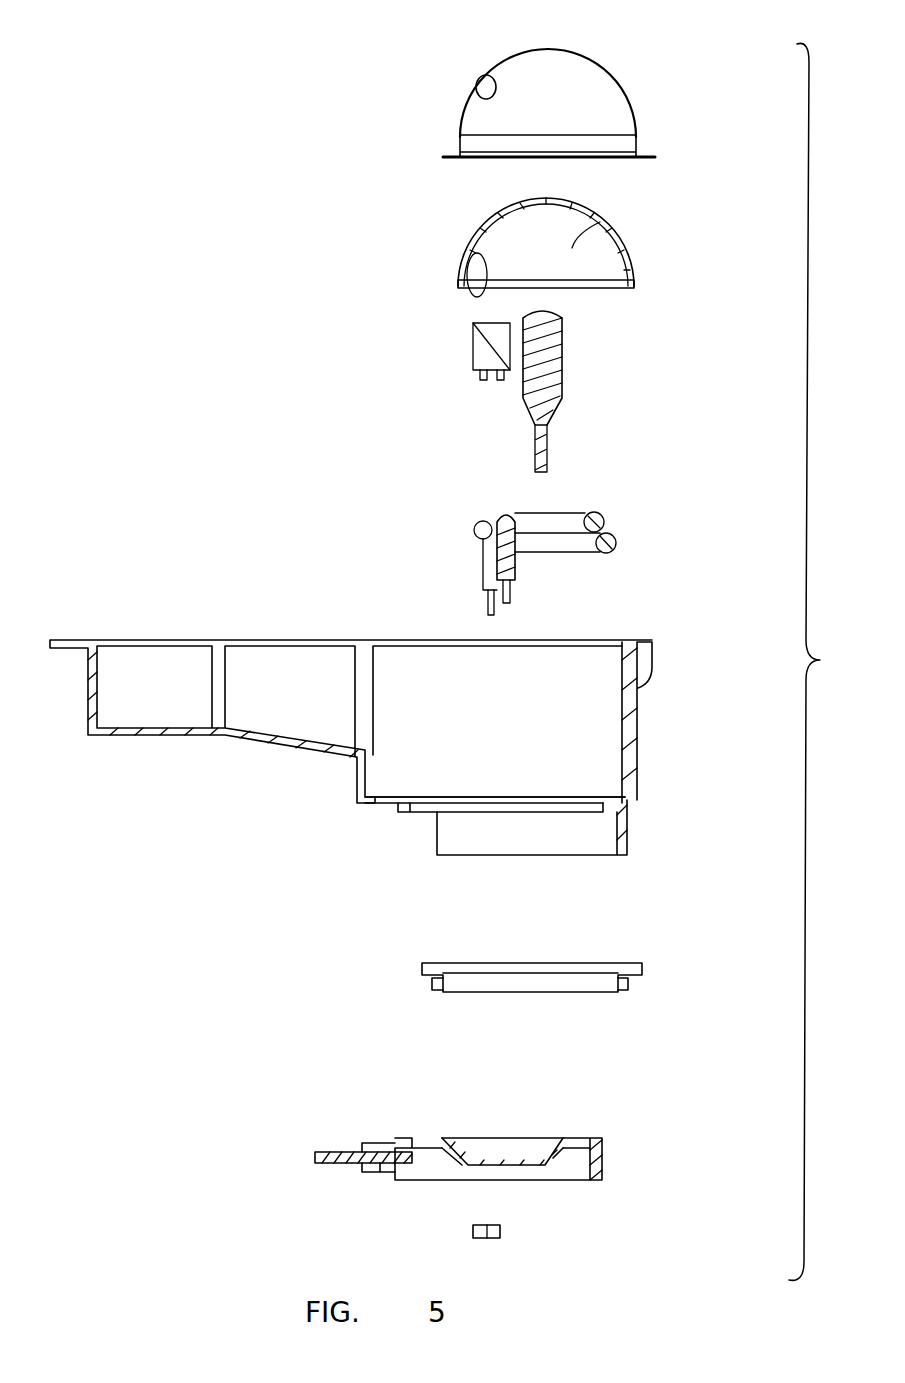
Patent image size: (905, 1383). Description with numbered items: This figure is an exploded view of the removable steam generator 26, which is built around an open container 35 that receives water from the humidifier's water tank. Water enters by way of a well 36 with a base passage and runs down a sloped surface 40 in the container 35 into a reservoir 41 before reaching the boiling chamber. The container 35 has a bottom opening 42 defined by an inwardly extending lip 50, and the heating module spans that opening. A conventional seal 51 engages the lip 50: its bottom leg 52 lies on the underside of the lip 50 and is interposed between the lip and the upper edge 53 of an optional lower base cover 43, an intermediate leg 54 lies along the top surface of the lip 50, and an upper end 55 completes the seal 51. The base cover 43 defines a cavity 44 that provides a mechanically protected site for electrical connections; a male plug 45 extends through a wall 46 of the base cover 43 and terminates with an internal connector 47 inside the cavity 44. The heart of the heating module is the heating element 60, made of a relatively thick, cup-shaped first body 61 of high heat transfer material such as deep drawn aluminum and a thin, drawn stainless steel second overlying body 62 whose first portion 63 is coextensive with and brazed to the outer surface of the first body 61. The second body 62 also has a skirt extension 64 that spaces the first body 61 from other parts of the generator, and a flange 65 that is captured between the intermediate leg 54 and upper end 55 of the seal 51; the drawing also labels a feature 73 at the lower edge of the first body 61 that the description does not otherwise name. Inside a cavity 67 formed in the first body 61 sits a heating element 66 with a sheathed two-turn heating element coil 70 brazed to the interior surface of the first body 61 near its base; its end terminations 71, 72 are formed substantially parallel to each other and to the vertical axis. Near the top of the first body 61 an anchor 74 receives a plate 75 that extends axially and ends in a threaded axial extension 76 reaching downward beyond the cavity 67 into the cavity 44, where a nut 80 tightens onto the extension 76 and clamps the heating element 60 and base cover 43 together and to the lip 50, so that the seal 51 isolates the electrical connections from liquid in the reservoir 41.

The steam generator 26 is at (195, 340).
The open container 35 is at (195, 640).
The well 36 is at (120, 690).
The sloped surface 40 is at (268, 748).
The reservoir 41 is at (362, 778).
The bottom opening 42 is at (410, 813).
The lower base cover 43 is at (265, 1133).
The cavity 44 is at (500, 1142).
The male plug 45 is at (325, 1160).
The wall 46 is at (380, 1173).
The internal connector 47 is at (425, 1165).
The inwardly extending lip 50 is at (612, 796).
The seal 51 is at (640, 968).
The bottom leg 52 is at (642, 990).
The upper edge 53 is at (597, 1138).
The intermediate leg 54 is at (425, 985).
The upper end 55 is at (425, 963).
The heating element 60 is at (282, 88).
The first body 61 is at (480, 228).
The second overlying body 62 is at (485, 76).
The first portion 63 is at (615, 68).
The skirt extension 64 is at (455, 142).
The flange 65 is at (447, 158).
The heating element 66 is at (350, 528).
The cavity 67 is at (598, 222).
The two-turn heating element coil 70 is at (608, 528).
The end termination 71 is at (520, 577).
The end termination 72 is at (483, 570).
The opening 73 is at (467, 295).
The anchor 74 is at (490, 420).
The plate 75 is at (560, 372).
The threaded axial extension 76 is at (548, 455).
The nut 80 is at (498, 1220).